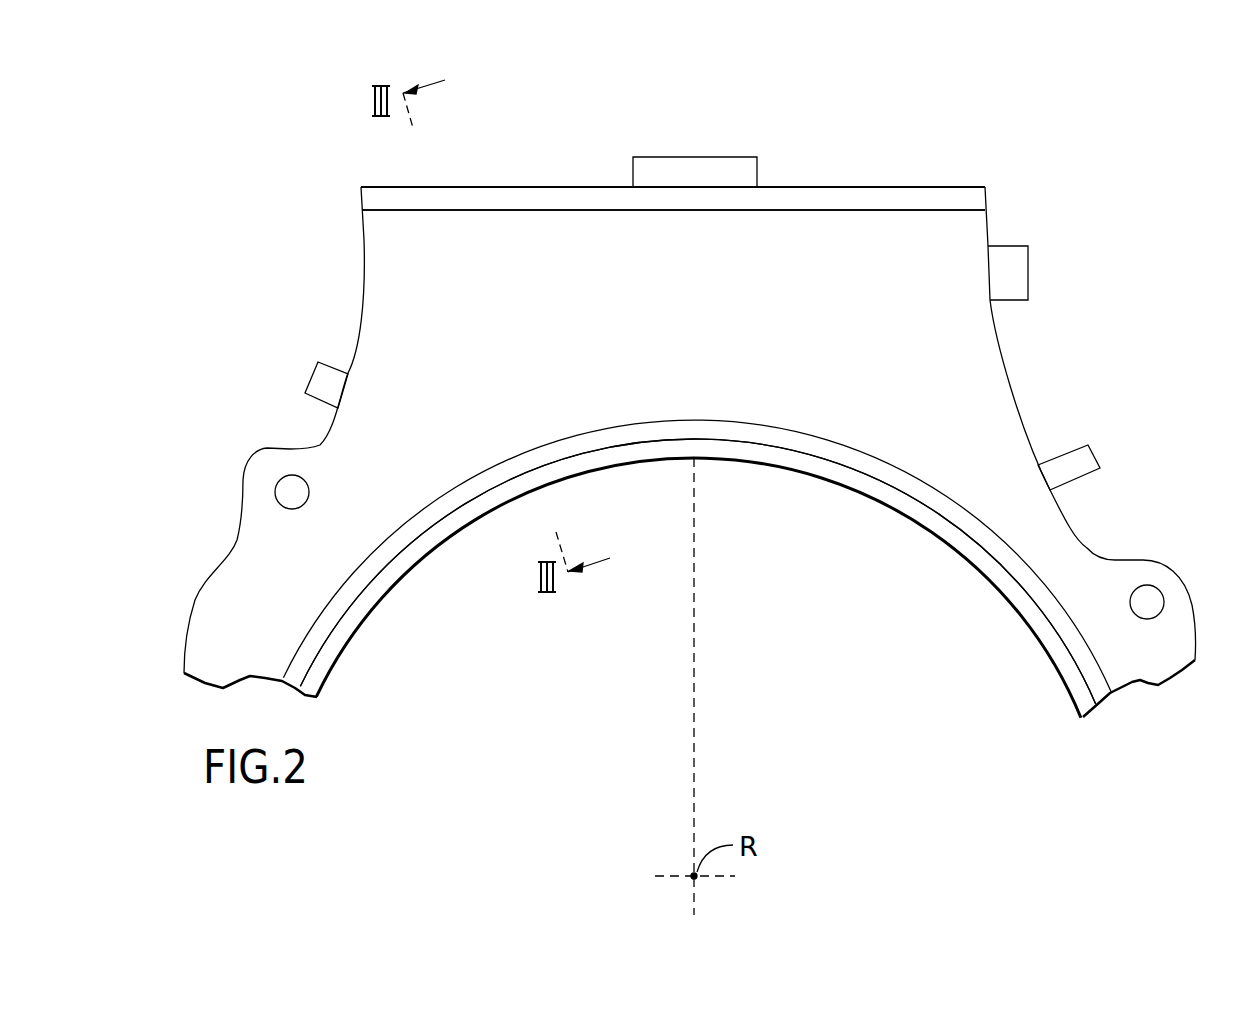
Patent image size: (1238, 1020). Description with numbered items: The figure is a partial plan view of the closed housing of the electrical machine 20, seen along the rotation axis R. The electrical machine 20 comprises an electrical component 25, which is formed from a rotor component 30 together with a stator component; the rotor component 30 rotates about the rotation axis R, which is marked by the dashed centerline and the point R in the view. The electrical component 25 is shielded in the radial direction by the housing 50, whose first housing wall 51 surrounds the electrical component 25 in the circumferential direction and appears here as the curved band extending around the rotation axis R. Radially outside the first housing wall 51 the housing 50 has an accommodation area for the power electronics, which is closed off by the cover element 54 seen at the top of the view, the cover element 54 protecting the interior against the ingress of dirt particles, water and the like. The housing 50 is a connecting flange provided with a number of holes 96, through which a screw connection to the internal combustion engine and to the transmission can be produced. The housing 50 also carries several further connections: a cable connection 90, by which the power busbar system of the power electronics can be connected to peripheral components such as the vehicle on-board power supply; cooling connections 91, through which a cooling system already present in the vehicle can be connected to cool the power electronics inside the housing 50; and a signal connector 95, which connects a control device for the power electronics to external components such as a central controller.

The electrical machine 20 is at (215, 347).
The electrical component 25 is at (493, 636).
The rotor component 30 is at (867, 622).
The housing 50 is at (878, 169).
The first housing wall 51 is at (868, 450).
The cover element 54 is at (548, 186).
The cable connection 90 is at (1010, 247).
The cooling connection 91 is at (325, 360).
The signal connector 95 is at (680, 156).
The holes 96 is at (283, 490).